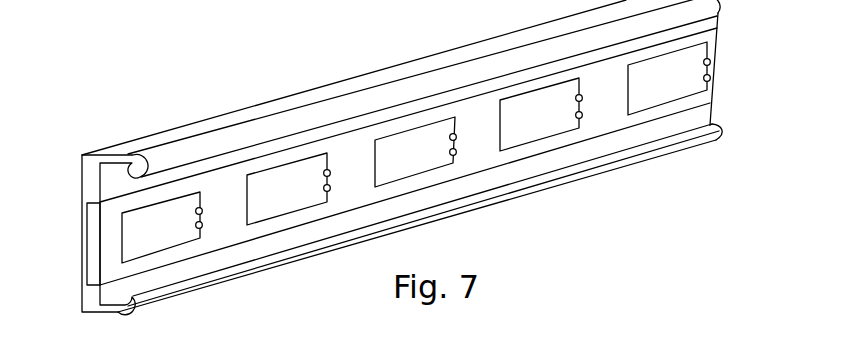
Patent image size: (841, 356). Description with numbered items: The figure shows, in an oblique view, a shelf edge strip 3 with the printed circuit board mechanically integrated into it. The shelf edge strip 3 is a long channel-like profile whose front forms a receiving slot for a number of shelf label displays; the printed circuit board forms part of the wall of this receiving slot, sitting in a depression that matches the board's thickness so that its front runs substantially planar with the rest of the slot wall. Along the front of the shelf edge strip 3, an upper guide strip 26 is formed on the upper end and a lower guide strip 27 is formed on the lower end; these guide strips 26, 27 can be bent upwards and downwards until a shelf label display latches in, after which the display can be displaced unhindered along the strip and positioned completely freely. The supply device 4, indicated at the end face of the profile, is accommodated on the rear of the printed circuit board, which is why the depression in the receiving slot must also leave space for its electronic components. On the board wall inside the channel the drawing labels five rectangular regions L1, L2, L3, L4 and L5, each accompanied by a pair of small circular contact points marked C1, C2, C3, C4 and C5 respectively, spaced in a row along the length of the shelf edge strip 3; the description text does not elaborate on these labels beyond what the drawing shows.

The shelf edge strip 3 is at (92, 172).
The supply device 4 is at (108, 238).
The upper guide strip 26 is at (208, 146).
The lower guide strip 27 is at (185, 291).
The lighting module 1 L1 is at (667, 104).
The lighting module 2 L2 is at (543, 140).
The lighting module 3 L3 is at (413, 178).
The lighting module 4 L4 is at (290, 214).
The lighting module 5 L5 is at (163, 251).
The connector 1 C1 is at (711, 74).
The connector 2 C2 is at (582, 112).
The connector 3 C3 is at (456, 149).
The connector 4 C4 is at (329, 185).
The connector 5 C5 is at (201, 222).